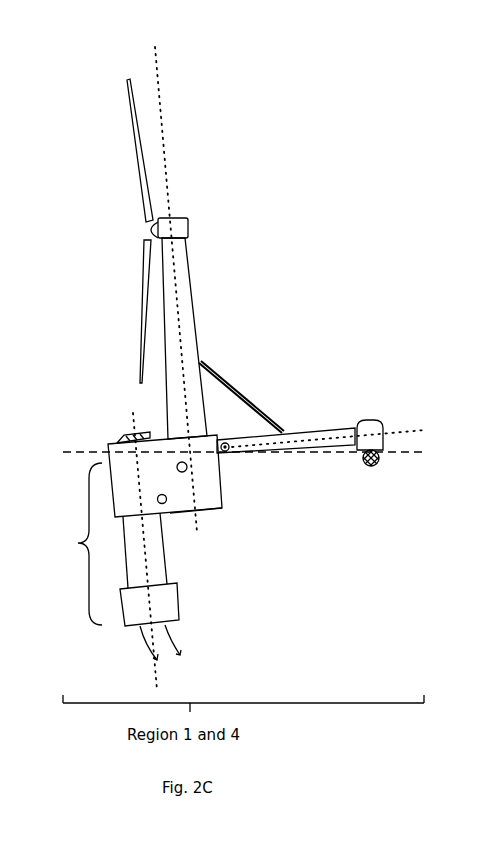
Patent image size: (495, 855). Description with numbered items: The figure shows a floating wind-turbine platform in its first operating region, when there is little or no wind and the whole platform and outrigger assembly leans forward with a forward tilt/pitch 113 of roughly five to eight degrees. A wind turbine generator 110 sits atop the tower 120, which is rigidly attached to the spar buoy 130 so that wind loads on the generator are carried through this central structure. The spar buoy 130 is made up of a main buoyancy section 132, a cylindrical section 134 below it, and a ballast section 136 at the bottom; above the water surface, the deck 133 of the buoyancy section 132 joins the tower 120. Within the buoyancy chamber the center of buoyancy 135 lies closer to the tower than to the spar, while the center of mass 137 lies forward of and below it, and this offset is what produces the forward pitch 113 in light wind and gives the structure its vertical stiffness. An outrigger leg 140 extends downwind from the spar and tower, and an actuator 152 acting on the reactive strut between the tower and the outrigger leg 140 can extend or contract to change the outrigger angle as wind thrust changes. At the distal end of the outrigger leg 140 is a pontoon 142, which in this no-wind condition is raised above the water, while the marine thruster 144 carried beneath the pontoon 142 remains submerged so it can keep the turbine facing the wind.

The wind turbine generator 110 is at (188, 215).
The forward tilt/pitch 113 is at (158, 90).
The tower 120 is at (192, 318).
The spar buoy 130 is at (164, 541).
The main buoyancy section 132 is at (222, 470).
The deck 133 is at (160, 437).
The cylindrical section 134 is at (172, 532).
The center of buoyancy 135 is at (214, 510).
The ballast section 136 is at (178, 612).
The center of mass 137 is at (166, 505).
The outrigger leg 140 is at (305, 452).
The pontoon 142 is at (381, 422).
The marine thruster 144 is at (383, 462).
The actuator 152 is at (282, 428).